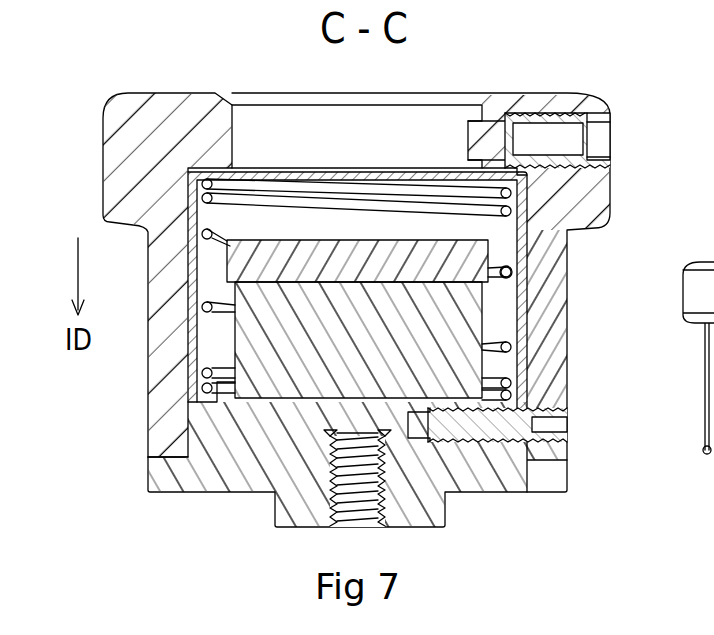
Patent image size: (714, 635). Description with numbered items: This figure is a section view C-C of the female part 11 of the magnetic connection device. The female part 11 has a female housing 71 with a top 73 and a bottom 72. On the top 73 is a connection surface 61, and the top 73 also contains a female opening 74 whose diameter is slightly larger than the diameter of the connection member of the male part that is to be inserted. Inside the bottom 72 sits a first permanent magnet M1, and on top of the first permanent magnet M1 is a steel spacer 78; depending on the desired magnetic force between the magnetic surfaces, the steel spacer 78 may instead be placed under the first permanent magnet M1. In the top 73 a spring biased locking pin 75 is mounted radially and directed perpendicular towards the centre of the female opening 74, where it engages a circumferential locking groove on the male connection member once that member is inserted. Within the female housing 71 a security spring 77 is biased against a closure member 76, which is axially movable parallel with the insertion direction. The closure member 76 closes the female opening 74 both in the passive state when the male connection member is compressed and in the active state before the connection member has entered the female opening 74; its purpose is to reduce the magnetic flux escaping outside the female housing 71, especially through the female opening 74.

The female part 11 is at (98, 64).
The connection surface 61 is at (196, 93).
The female housing 71 is at (166, 407).
The bottom 72 is at (263, 447).
The top 73 is at (165, 122).
The female opening 74 is at (442, 127).
The spring biased locking pin 75 is at (478, 122).
The closure member 76 is at (303, 178).
The security spring 77 is at (512, 272).
The steel spacer 78 is at (435, 264).
The first permanent magnet M1 is at (435, 312).